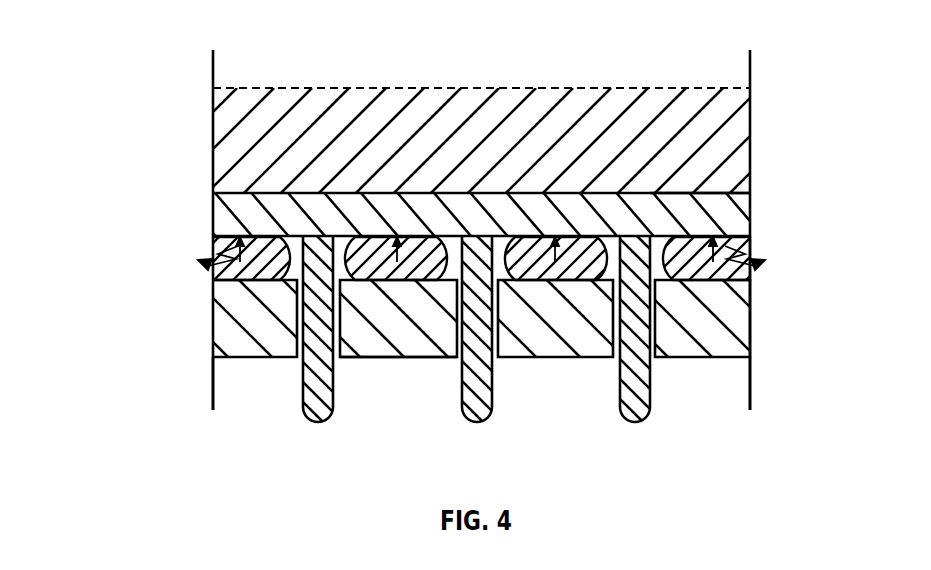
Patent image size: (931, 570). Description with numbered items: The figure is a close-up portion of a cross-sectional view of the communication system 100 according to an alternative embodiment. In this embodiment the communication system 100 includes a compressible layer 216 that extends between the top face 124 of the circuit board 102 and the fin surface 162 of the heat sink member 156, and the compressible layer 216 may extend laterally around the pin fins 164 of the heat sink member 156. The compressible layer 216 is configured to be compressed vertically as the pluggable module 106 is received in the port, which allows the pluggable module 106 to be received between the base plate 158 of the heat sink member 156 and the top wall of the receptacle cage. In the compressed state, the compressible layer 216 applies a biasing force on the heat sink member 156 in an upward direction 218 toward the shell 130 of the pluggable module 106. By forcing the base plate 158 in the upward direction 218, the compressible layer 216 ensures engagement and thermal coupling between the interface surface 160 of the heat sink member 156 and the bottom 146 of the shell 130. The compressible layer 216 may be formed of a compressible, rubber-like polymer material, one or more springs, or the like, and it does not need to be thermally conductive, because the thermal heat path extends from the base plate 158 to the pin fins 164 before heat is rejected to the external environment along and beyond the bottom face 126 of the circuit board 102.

The communication system 100 is at (132, 40).
The circuit board 102 is at (258, 330).
The pluggable module 106 is at (260, 128).
The top face 124 is at (365, 270).
The bottom face 126 is at (400, 358).
The shell 130 is at (708, 123).
The bottom 146 is at (722, 197).
The heat sink member 156 is at (242, 192).
The base plate 158 is at (257, 215).
The interface surface 160 is at (687, 192).
The fin surface 162 is at (430, 252).
The pin fins 164 is at (310, 392).
The compressible layer 216 is at (213, 243).
The upward direction 218 is at (730, 265).